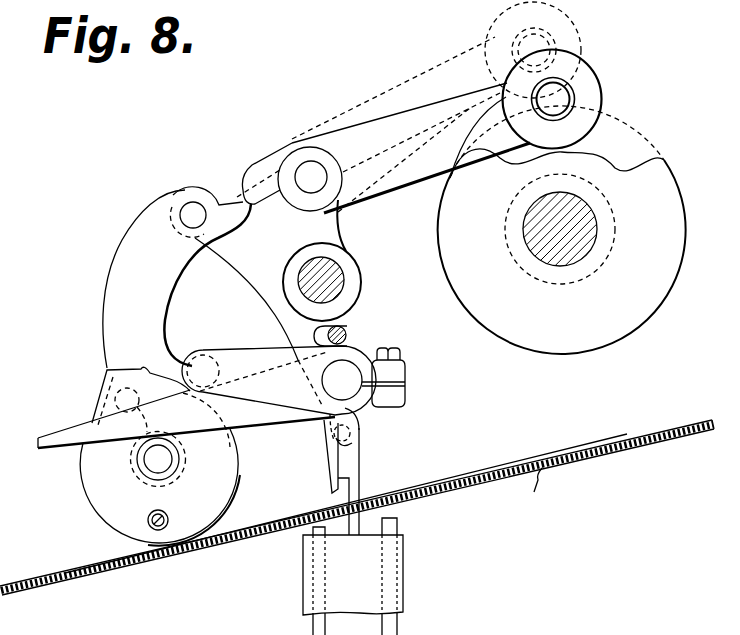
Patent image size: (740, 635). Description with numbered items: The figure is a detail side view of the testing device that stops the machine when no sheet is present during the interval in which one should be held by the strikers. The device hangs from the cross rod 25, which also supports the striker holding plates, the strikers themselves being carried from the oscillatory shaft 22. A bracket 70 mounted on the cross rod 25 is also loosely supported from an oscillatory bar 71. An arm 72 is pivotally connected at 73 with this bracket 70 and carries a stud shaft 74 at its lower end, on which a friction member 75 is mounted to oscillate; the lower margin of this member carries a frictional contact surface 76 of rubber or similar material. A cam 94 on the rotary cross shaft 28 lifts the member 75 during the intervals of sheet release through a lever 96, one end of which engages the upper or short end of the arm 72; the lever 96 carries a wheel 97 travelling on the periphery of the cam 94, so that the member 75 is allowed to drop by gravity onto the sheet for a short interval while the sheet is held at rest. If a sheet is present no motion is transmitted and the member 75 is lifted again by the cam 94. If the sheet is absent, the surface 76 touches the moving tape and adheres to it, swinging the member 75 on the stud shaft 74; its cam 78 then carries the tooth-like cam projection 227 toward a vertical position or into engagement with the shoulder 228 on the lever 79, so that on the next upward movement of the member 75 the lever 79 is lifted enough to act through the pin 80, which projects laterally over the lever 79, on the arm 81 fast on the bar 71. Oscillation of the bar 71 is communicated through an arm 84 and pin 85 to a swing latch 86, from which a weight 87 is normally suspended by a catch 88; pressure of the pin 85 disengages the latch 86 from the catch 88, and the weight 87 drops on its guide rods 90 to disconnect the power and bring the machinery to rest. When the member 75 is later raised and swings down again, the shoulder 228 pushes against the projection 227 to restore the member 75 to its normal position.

The oscillatory shaft 22 is at (347, 332).
The cross rod 25 is at (336, 283).
The rotary cross shaft 28 is at (582, 223).
The bracket 70 is at (270, 303).
The oscillatory bar 71 is at (352, 392).
The arm 72 is at (177, 277).
The pivot 73 is at (193, 214).
The stud shaft 74 is at (162, 458).
The friction member 75 is at (159, 486).
The frictional contact surface 76 is at (231, 493).
The cam 78 is at (147, 474).
The lever 79 is at (186, 419).
The pin 80 is at (219, 368).
The arm 81 is at (279, 380).
The arm 84 is at (350, 436).
The pin 85 is at (345, 450).
The swing latch 86 is at (327, 462).
The weight 87 is at (353, 575).
The catch 88 is at (352, 482).
The guide rods 90 is at (384, 623).
The cam 94 is at (562, 230).
The lever 96 is at (383, 125).
The wheel 97 is at (594, 97).
The cam projection 227 is at (136, 440).
The shoulder 228 is at (131, 445).